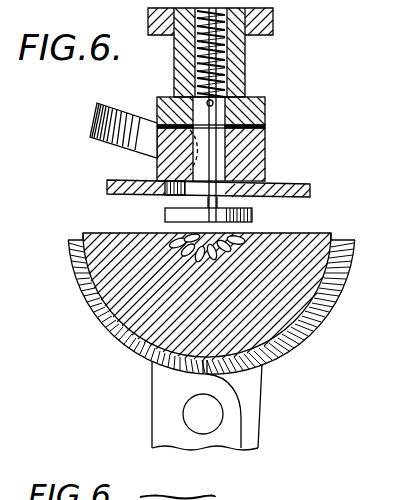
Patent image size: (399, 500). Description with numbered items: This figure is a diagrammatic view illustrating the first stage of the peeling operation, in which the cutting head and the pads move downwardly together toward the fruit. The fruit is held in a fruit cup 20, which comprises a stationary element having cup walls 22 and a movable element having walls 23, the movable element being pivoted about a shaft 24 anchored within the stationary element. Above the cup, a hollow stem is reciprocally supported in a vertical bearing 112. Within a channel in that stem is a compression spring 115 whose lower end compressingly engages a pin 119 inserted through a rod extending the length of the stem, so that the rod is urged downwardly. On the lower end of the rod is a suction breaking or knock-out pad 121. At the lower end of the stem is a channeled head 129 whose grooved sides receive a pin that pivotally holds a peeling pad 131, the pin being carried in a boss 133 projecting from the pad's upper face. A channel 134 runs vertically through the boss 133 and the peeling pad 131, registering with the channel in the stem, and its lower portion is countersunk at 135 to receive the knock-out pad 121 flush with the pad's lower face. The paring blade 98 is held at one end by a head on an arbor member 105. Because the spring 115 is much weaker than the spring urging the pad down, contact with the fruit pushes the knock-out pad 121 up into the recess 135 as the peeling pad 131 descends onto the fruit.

The fruit cup 20 is at (123, 358).
The cup walls 22 is at (105, 318).
The walls 23 is at (318, 326).
The shaft 24 is at (213, 417).
The paring blade 98 is at (92, 127).
The arbor member 105 is at (223, 160).
The vertical bearing 112 is at (182, 53).
The compression spring 115 is at (247, 52).
The pin 119 is at (247, 73).
The knock-out pad 121 is at (250, 216).
The channeled head 129 is at (250, 108).
The peeling pad 131 is at (310, 195).
The boss 133 is at (190, 168).
The channel 134 is at (265, 140).
The countersink 135 is at (170, 196).